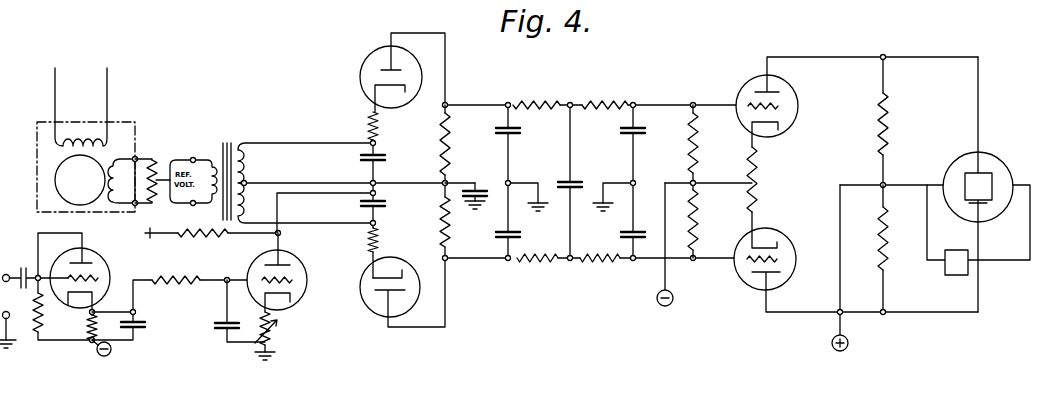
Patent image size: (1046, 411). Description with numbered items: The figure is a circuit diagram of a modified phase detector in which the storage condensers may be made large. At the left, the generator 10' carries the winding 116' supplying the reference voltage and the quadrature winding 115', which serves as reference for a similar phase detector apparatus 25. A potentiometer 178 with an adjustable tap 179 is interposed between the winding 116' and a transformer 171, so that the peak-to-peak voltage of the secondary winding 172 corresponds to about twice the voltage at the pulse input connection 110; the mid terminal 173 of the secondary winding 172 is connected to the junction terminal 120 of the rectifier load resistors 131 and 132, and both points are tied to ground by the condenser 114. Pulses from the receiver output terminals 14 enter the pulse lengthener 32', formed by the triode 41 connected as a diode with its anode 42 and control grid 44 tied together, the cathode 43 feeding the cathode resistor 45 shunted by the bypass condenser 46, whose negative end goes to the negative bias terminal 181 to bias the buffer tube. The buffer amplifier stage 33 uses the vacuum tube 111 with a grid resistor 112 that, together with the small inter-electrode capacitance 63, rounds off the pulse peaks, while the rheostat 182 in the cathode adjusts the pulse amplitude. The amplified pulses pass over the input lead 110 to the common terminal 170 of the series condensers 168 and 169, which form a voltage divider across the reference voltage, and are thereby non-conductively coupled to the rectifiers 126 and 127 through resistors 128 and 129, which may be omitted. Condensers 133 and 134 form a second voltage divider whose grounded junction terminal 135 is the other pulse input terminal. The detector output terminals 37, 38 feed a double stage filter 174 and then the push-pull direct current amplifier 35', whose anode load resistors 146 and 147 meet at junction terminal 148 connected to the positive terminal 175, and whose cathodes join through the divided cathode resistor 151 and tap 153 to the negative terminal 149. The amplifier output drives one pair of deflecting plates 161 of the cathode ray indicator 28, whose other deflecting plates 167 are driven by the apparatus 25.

The gauge unit 10' is at (70, 156).
The quadrature winding 115' is at (73, 107).
The generator winding 116' is at (124, 159).
The potentiometer 178 is at (157, 159).
The adjustable tap 179 is at (154, 196).
The transformer 171 is at (229, 142).
The secondary winding 172 is at (243, 142).
The mid terminal 173 is at (246, 182).
The input lead 110 is at (244, 236).
The pulse receiver output terminals 14 is at (34, 308).
The pulse lengthener 32' is at (149, 283).
The triode vacuum tube 41 is at (96, 250).
The anode 42 is at (81, 242).
The control grid 44 is at (100, 276).
The cathode 43 is at (70, 304).
The cathode resistor 45 is at (88, 330).
The bypass condenser 46 is at (146, 326).
The negative bias terminal 181 is at (111, 349).
The buffer amplifier stage 33 is at (248, 296).
The grid resistor 112 is at (180, 286).
The inter-electrode capacitance 63 is at (220, 331).
The vacuum tube 111 is at (308, 291).
The rheostat 182 is at (283, 331).
The rectifier 126 is at (360, 64).
The resistor 128 is at (370, 128).
The condenser 168 is at (384, 158).
The common terminal 170 is at (376, 193).
The condenser 169 is at (386, 208).
The resistor 129 is at (367, 239).
The rectifier 127 is at (369, 311).
The phase detector output terminal 37 is at (448, 104).
The rectifier load resistor 131 is at (440, 134).
The junction terminal 120 is at (448, 182).
The condenser 114 is at (481, 189).
The rectifier load resistor 132 is at (442, 243).
The phase detector output terminal 38 is at (447, 258).
The double stage filter 174 is at (574, 164).
The condenser 133 is at (496, 133).
The condenser 134 is at (496, 232).
The junction terminal 135 is at (510, 182).
The direct current amplifier 35' is at (811, 192).
The tap 153 is at (698, 188).
The negative terminal 149 is at (675, 302).
The divided cathode resistor 151 is at (761, 156).
The positive terminal 175 is at (851, 345).
The anode load resistor 146 is at (888, 128).
The junction terminal 148 is at (883, 185).
The anode load resistor 147 is at (891, 250).
The cathode ray indicator 28 is at (973, 184).
The deflecting plates 167 is at (960, 175).
The deflecting plates 161 is at (985, 173).
The phase detector apparatus 25 is at (955, 276).